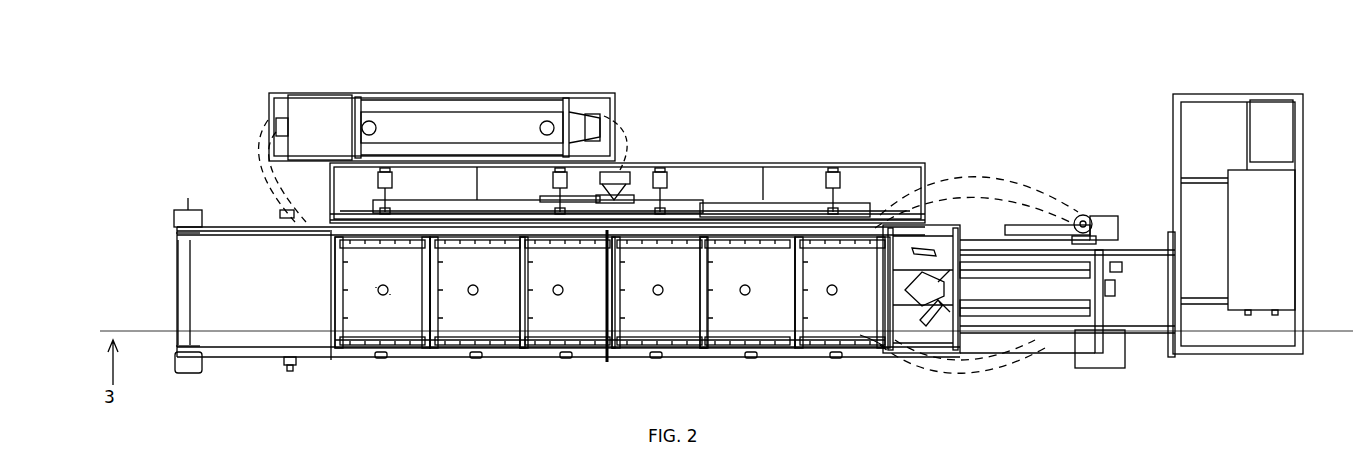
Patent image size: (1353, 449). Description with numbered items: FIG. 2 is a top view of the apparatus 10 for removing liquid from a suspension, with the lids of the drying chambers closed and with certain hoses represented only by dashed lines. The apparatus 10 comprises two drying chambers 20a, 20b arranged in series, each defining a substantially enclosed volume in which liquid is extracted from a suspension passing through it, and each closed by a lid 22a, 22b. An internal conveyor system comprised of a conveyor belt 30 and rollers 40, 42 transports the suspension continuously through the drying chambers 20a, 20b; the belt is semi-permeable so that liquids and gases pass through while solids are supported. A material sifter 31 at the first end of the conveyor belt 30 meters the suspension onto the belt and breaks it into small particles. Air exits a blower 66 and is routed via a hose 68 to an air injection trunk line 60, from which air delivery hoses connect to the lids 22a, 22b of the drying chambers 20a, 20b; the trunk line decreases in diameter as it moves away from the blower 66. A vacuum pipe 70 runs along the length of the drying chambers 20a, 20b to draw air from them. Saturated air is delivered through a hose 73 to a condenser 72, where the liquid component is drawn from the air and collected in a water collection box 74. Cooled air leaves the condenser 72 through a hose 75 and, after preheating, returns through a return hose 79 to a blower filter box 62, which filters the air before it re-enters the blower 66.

The apparatus 10 is at (181, 62).
The water collection box 74 is at (328, 100).
The condenser 72 is at (510, 106).
The hose 73 is at (628, 118).
The hose 75 is at (262, 128).
The air injection trunk line 60 is at (783, 208).
The vacuum pipe 70 is at (705, 197).
The conveyor belt 30 is at (233, 248).
The roller 40 is at (200, 372).
The roller 42 is at (290, 368).
The drying chamber 20b is at (607, 372).
The drying chamber 20a is at (880, 370).
The lid 22b is at (340, 348).
The lid 22a is at (880, 355).
The material sifter 31 is at (1085, 340).
The blower 66 is at (1095, 216).
The blower filter box 62 is at (1126, 360).
The hose 68 is at (1022, 175).
The return hose 79 is at (930, 388).